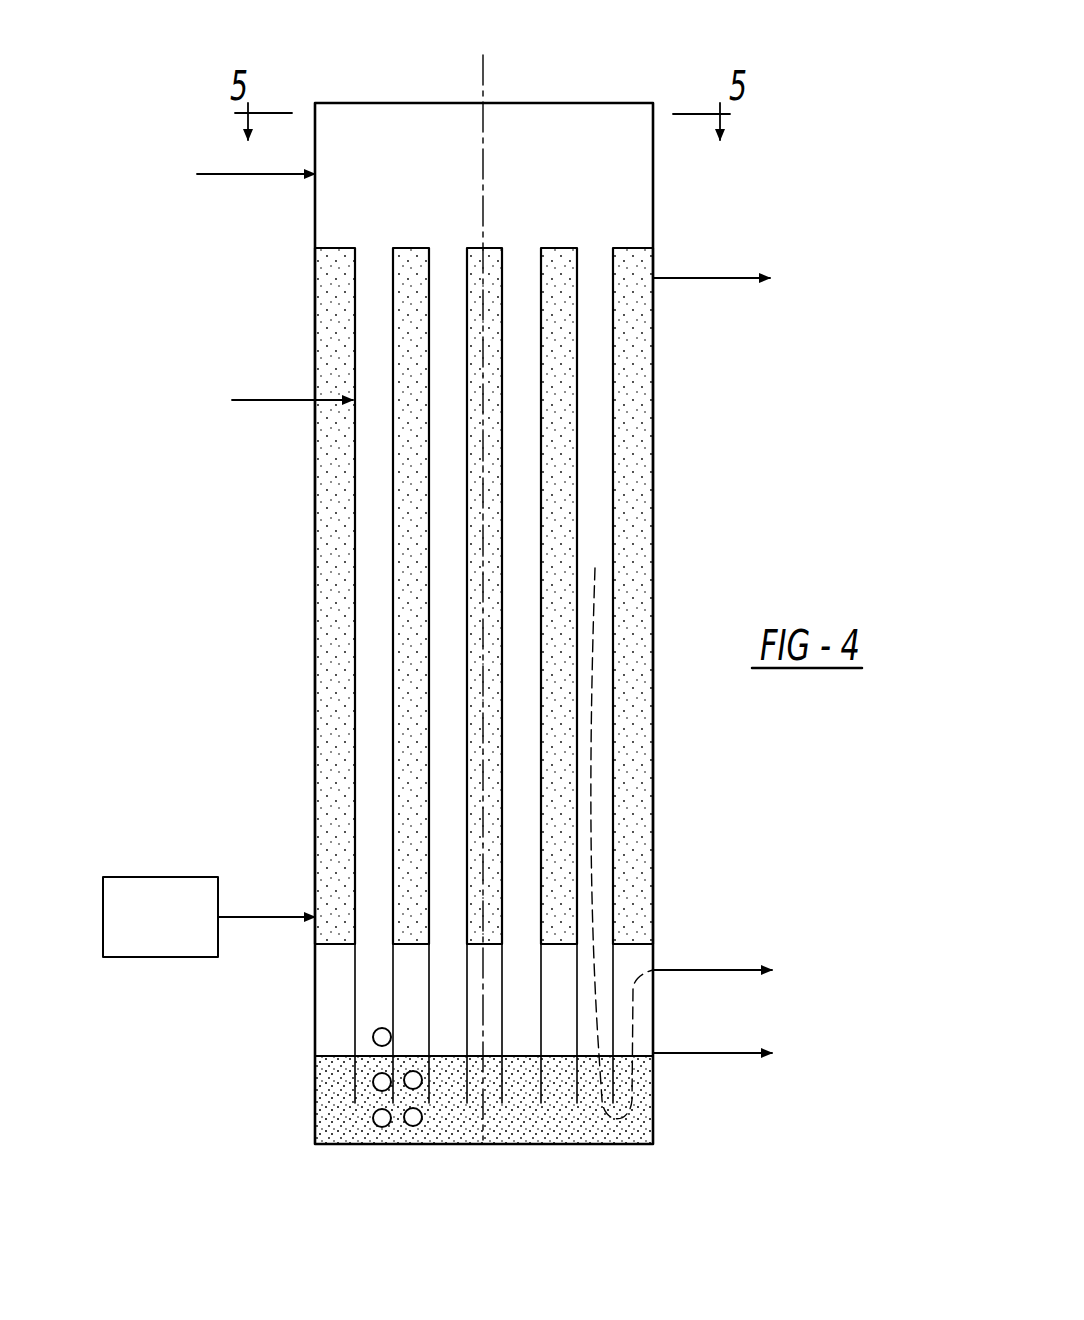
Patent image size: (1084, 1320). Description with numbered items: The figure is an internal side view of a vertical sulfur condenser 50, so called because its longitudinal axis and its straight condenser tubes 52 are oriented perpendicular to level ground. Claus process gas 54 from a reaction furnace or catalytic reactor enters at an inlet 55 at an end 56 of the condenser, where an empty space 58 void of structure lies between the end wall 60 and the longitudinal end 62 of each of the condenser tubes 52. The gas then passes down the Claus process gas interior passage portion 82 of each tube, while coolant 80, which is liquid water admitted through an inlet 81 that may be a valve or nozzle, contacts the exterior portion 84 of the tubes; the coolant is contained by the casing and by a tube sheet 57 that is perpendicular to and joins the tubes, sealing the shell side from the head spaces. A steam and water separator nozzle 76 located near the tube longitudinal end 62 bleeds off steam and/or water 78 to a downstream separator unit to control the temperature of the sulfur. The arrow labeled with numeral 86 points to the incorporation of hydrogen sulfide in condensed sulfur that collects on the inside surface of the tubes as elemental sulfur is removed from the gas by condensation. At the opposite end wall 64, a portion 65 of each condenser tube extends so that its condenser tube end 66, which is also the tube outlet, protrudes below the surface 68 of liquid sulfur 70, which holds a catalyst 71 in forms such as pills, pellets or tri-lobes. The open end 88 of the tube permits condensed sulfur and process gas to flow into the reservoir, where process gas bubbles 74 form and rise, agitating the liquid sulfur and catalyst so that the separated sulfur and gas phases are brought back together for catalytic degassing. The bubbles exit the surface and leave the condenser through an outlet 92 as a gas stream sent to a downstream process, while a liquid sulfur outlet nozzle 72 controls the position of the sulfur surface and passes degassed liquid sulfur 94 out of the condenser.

The vertical sulfur condenser 50 is at (843, 450).
The condenser tubes 52 is at (450, 332).
The Claus process gas 54 is at (232, 172).
The inlet 55 is at (313, 178).
The end 56 is at (653, 108).
The tube sheet 57 is at (410, 248).
The empty space 58 is at (593, 160).
The end wall 60 is at (475, 103).
The longitudinal end 62 is at (377, 248).
The end wall 64 is at (620, 1145).
The portion 65 is at (393, 962).
The condenser tube end 66 is at (478, 1108).
The surface 68 is at (330, 1055).
The liquid sulfur 70 is at (328, 1136).
The catalyst 71 is at (330, 1096).
The liquid sulfur outlet nozzle 72 is at (655, 1052).
The process gas bubbles 74 is at (382, 1028).
The steam and water separator nozzle 76 is at (653, 283).
The steam and/or water 78 is at (728, 278).
The coolant 80 is at (335, 628).
The inlet 81 is at (313, 912).
The Claus process gas interior passage portion 82 is at (375, 768).
The exterior portion 84 is at (352, 491).
The incorporation of hydrogen sulfide in condensed sulfur 86 is at (282, 402).
The open end 88 is at (430, 1035).
The outlet 92 is at (653, 968).
The degassed liquid sulfur 94 is at (705, 1057).